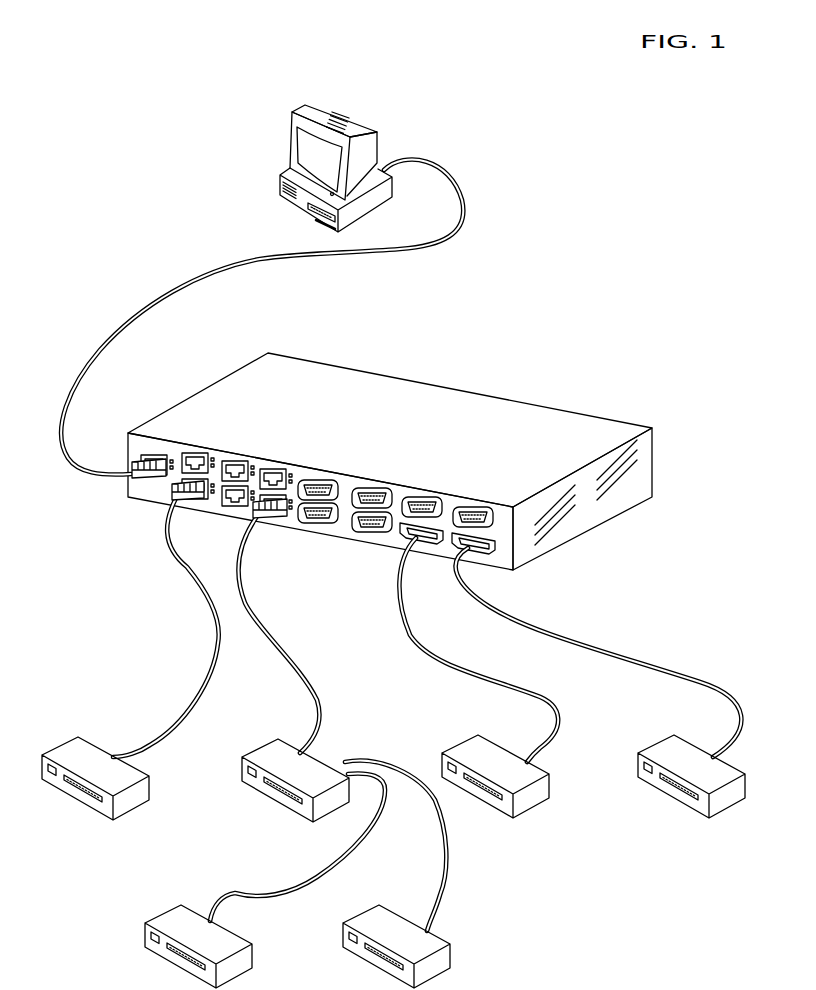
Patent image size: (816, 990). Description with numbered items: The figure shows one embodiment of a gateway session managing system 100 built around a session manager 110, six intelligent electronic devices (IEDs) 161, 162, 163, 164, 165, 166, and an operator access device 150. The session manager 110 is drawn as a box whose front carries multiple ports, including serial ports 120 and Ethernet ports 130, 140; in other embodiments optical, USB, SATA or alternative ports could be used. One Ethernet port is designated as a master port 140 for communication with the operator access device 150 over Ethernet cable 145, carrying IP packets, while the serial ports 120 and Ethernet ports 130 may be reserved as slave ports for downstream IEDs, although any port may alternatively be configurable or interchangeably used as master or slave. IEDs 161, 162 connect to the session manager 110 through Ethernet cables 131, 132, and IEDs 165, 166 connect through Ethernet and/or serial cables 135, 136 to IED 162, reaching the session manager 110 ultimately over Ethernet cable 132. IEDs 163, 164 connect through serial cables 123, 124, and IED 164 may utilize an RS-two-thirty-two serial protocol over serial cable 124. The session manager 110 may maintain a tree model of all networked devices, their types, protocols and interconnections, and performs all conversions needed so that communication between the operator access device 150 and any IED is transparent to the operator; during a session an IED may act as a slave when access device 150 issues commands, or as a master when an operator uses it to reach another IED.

The system 100 is at (104, 75).
The session manager 110 is at (392, 432).
The serial ports 120 is at (430, 503).
The serial cable 123 is at (433, 657).
The serial cable 124 is at (578, 640).
The Ethernet ports 130 is at (233, 463).
The Ethernet cable 131 is at (213, 643).
The Ethernet cable 132 is at (268, 642).
The Ethernet and/or serial cable 135 is at (303, 890).
The Ethernet and/or serial cable 136 is at (445, 850).
The master port 140 is at (152, 458).
The Ethernet cable 145 is at (167, 293).
The operator access device 150 is at (337, 108).
The intelligent electronic device 161 is at (78, 737).
The intelligent electronic device 162 is at (278, 737).
The intelligent electronic device 163 is at (477, 735).
The intelligent electronic device 164 is at (673, 735).
The intelligent electronic device 165 is at (180, 905).
The intelligent electronic device 166 is at (378, 905).